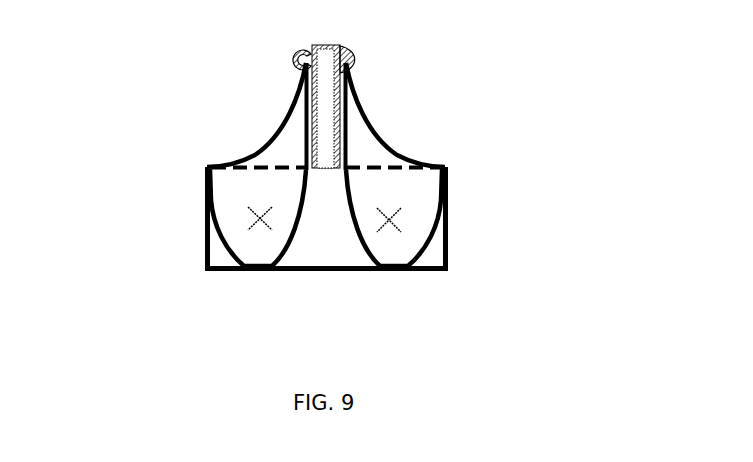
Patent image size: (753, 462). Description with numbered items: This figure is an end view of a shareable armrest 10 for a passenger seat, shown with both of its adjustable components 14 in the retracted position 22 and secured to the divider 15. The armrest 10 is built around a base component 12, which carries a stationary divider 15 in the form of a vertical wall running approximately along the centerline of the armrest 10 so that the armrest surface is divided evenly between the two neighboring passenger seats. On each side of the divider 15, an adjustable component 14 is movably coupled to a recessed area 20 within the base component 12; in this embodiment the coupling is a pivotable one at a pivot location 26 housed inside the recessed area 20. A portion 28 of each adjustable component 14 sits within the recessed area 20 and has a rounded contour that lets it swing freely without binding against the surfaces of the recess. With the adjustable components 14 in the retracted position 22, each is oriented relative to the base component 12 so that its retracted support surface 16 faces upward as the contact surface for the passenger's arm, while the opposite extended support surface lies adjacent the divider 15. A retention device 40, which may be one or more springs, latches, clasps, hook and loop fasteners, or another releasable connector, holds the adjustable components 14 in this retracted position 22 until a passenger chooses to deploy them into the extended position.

The armrest 10 is at (130, 116).
The retracted position 22 is at (595, 84).
The base component 12 is at (202, 265).
The adjustable component 14 is at (407, 155).
The divider 15 is at (323, 145).
The retracted support surface 16 is at (372, 130).
The recessed area 20 is at (438, 257).
The pivot location 26 is at (382, 223).
The portion 28 is at (422, 189).
The retention device 40 is at (341, 47).